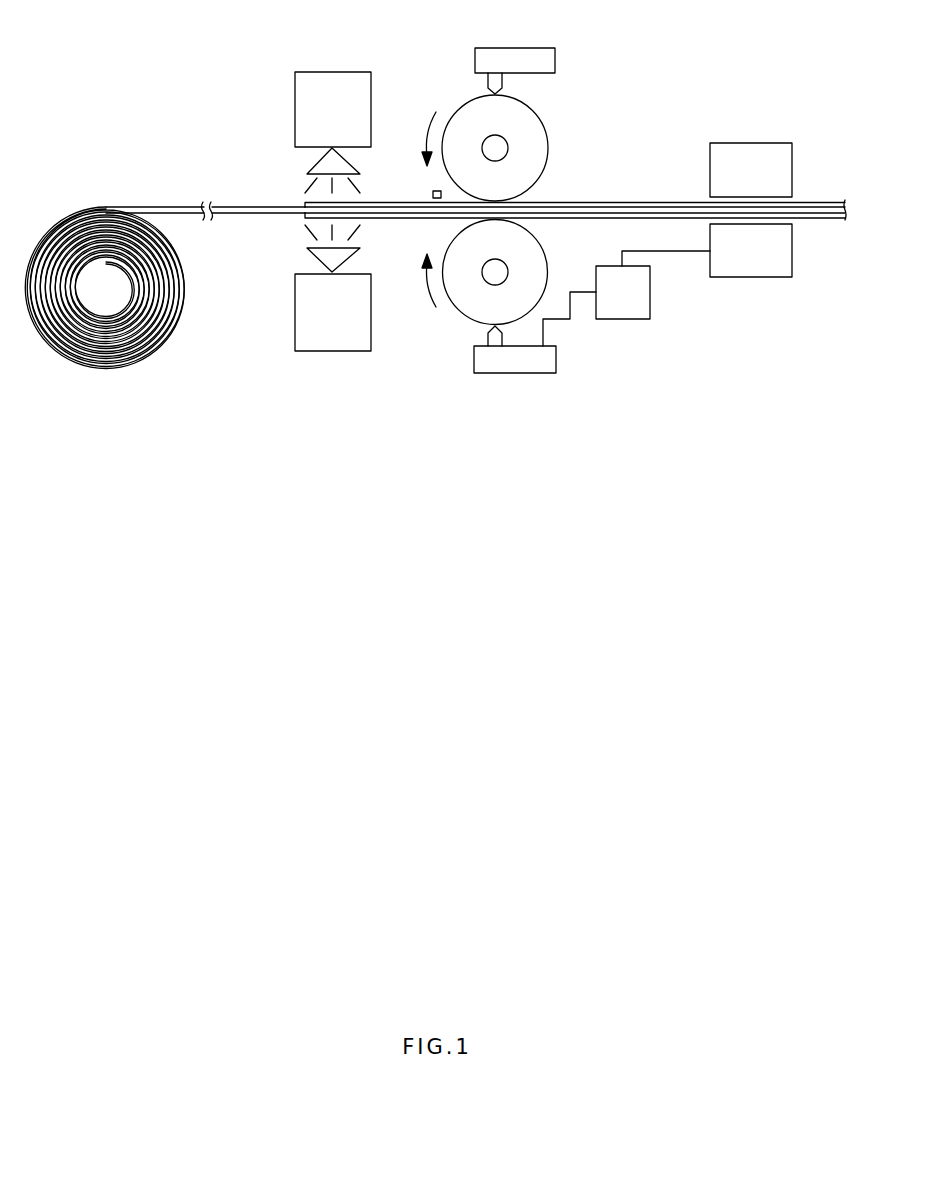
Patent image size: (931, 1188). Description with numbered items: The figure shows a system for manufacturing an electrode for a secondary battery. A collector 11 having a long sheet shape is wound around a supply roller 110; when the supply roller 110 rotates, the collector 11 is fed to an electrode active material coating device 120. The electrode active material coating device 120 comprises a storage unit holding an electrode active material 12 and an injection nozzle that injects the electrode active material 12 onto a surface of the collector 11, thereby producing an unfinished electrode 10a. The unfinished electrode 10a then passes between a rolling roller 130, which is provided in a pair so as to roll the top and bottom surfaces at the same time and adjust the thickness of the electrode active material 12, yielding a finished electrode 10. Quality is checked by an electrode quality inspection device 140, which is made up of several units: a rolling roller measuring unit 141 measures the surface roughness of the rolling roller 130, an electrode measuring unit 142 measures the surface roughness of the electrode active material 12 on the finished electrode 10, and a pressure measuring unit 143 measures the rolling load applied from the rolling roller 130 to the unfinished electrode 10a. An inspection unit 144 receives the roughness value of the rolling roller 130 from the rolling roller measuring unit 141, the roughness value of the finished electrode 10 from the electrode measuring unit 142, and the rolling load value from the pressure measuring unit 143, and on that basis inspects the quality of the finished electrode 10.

The finished electrode 10 is at (476, 165).
The unfinished electrode 10a is at (278, 144).
The collector 11 is at (476, 165).
The electrode active material 12 is at (305, 203).
The supply roller 110 is at (103, 288).
The electrode active material coating device 120 is at (331, 70).
The rolling roller 130 is at (523, 267).
The electrode quality inspection device 140 is at (600, 305).
The rolling roller measuring unit 141 is at (513, 375).
The electrode measuring unit 142 is at (750, 280).
The pressure measuring unit 143 is at (432, 199).
The inspection unit 144 is at (623, 323).